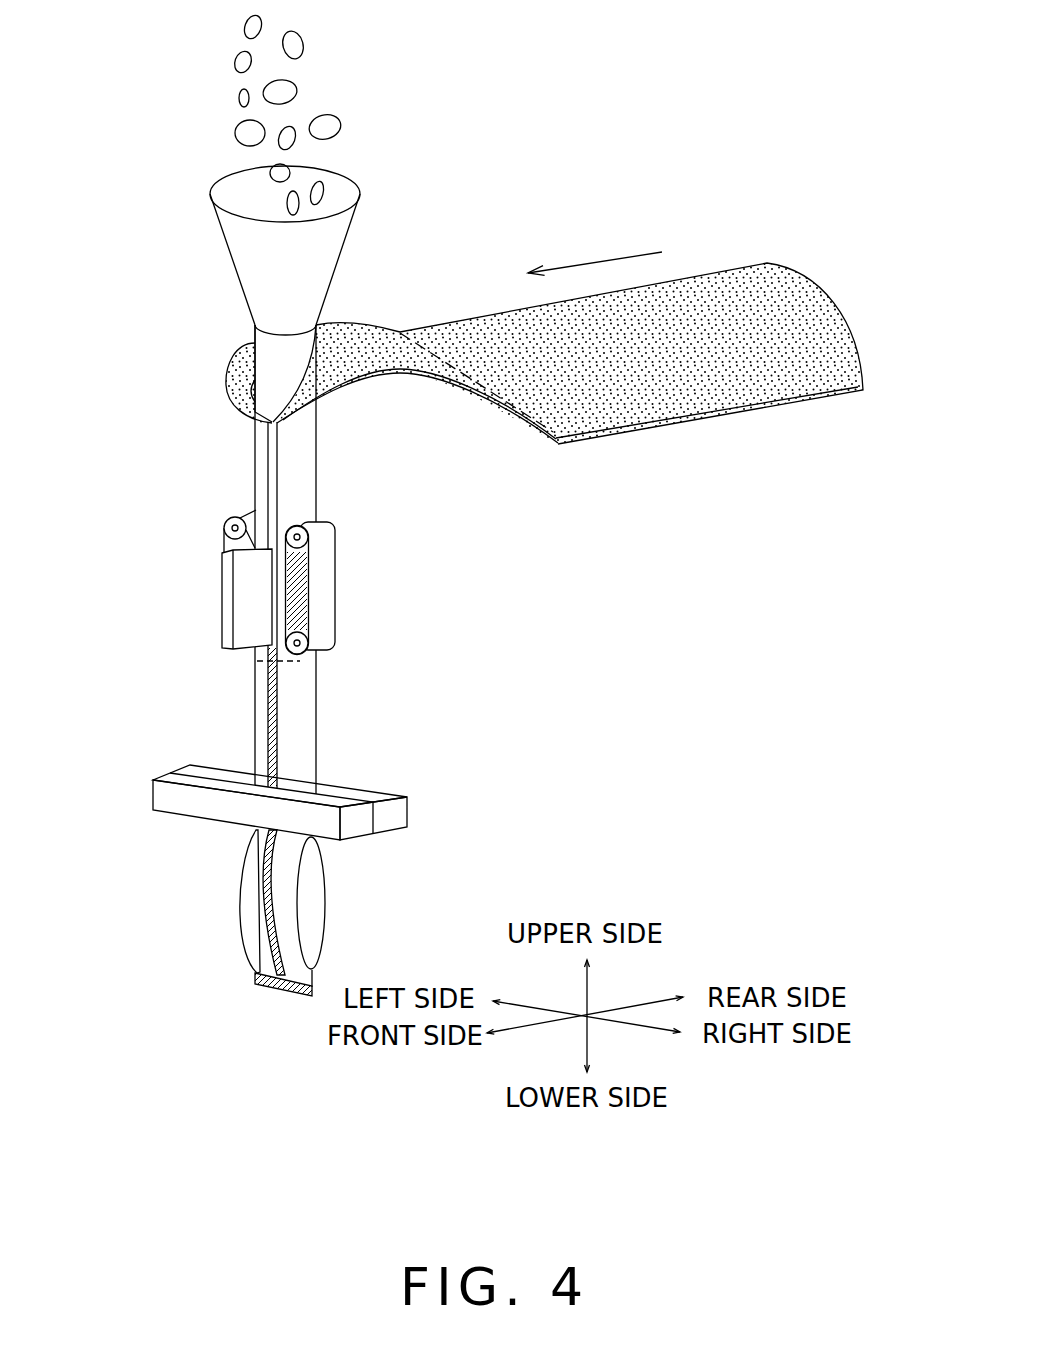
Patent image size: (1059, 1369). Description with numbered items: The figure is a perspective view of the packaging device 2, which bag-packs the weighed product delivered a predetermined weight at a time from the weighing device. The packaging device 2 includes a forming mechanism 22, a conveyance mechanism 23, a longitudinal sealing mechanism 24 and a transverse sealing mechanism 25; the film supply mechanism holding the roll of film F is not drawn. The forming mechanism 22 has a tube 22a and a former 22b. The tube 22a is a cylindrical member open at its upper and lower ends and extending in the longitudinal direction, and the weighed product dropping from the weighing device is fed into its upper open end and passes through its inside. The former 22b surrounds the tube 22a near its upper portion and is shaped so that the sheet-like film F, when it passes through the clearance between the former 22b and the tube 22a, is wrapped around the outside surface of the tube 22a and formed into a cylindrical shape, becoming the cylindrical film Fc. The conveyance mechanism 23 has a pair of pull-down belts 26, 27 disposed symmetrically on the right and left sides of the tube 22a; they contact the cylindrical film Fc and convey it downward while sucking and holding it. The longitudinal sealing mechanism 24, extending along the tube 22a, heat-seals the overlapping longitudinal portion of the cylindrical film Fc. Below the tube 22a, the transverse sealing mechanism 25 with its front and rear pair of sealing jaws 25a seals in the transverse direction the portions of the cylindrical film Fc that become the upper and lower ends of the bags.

The packaging device 2 is at (565, 63).
The forming mechanism 22 is at (112, 367).
The tube 22a is at (253, 338).
The former 22b is at (225, 402).
The film F is at (712, 312).
The cylindrical film Fc is at (303, 713).
The conveyance mechanism 23 is at (413, 573).
The longitudinal sealing mechanism 24 is at (232, 597).
The pull-down belt 26 is at (224, 538).
The pull-down belt 27 is at (322, 600).
The transverse sealing mechanism 25 is at (425, 813).
The sealing jaw 25a is at (220, 807).